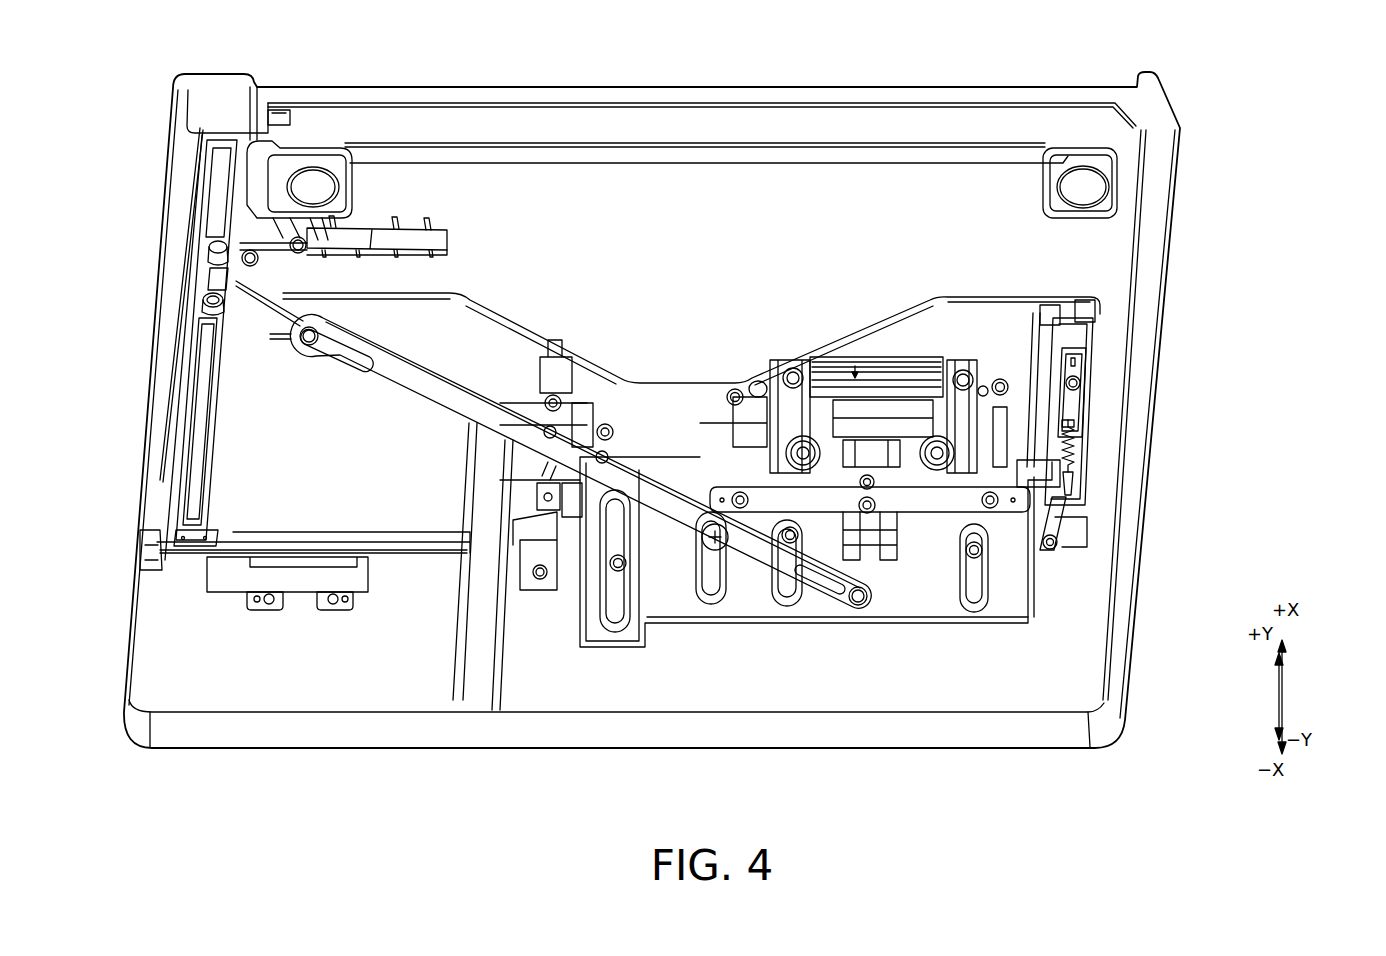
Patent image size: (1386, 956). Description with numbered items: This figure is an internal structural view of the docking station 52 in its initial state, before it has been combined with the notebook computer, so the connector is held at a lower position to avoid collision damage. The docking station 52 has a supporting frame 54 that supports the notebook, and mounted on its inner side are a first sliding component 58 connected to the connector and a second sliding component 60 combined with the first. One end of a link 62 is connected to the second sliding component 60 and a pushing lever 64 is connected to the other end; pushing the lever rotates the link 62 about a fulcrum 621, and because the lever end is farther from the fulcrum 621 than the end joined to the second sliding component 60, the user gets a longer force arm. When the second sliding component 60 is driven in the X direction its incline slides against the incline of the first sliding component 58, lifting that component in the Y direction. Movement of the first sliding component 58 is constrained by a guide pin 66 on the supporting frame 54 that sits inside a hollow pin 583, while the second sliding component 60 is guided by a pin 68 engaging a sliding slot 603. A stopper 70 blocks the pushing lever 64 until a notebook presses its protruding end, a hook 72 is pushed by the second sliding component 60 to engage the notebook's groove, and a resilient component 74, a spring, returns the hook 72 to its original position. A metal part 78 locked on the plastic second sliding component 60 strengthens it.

The docking station 52 is at (1248, 130).
The supporting frame 54 is at (172, 152).
The first sliding component 58 is at (858, 364).
The second sliding component 60 is at (1043, 603).
The link 62 is at (410, 388).
The pushing lever 64 is at (192, 290).
The guide pin 66 is at (793, 368).
The pin 68 is at (626, 572).
The stopper 70 is at (205, 577).
The hook 72 is at (1092, 393).
The resilient component 74 is at (1078, 445).
The metal part 78 is at (918, 512).
The hollow pin 583 is at (748, 406).
The sliding slot 603 is at (617, 630).
The fulcrum 621 is at (722, 552).